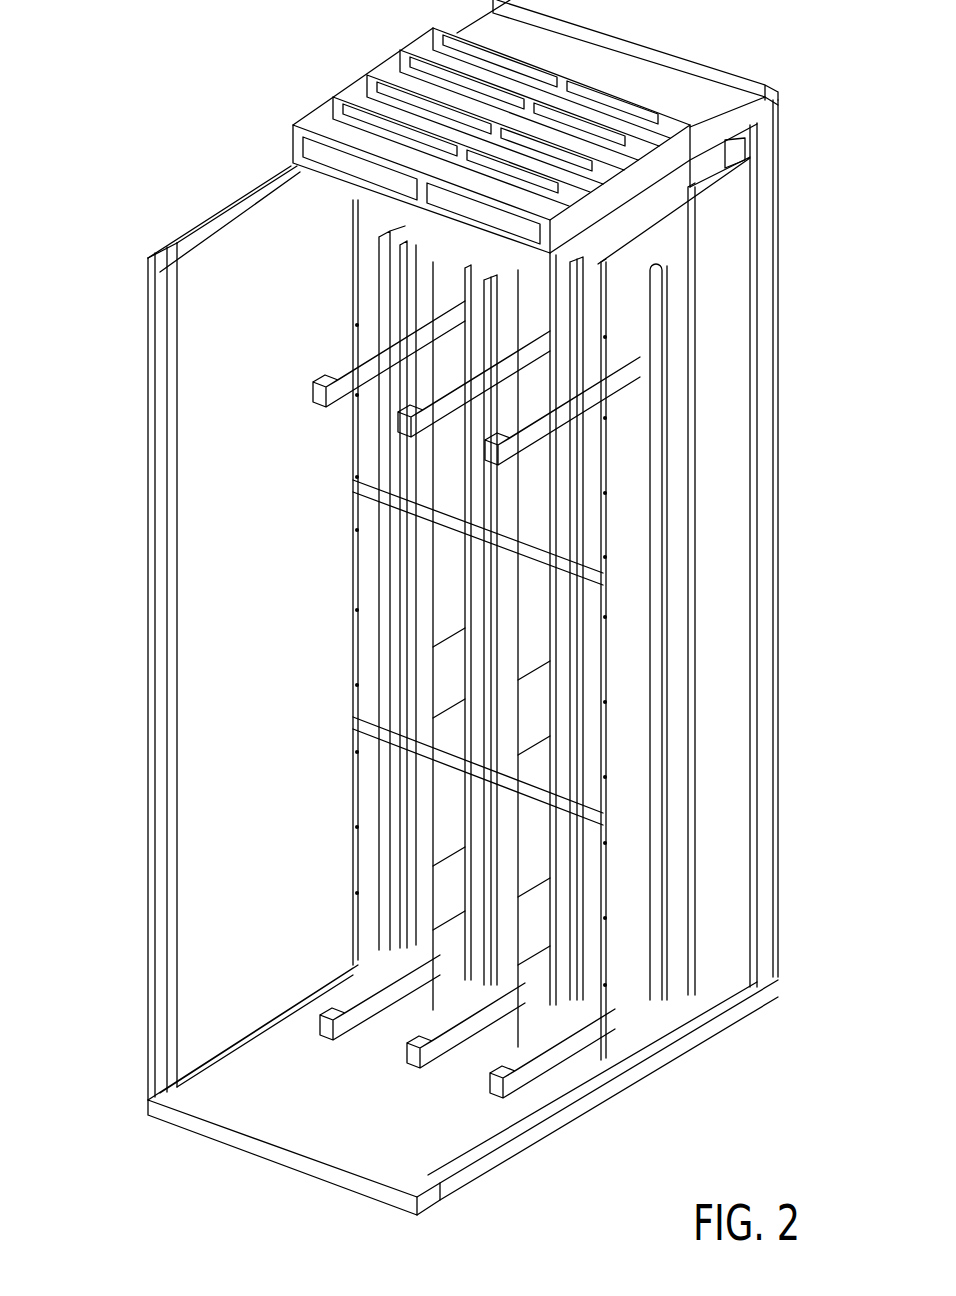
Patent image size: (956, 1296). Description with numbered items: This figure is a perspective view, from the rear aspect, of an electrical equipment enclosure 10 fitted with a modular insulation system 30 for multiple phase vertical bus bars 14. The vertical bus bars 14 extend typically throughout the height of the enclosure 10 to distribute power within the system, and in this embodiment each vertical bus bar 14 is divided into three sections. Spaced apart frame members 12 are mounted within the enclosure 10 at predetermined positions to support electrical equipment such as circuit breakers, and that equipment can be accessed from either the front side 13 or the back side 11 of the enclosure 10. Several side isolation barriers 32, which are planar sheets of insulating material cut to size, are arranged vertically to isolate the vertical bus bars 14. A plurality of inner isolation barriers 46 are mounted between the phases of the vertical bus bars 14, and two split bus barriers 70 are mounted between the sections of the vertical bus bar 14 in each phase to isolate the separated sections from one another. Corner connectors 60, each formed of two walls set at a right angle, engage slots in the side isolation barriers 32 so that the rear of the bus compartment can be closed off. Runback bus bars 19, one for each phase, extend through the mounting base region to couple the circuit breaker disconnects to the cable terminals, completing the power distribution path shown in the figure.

The electrical equipment enclosure 10 is at (248, 80).
The back side 11 is at (122, 1030).
The frame members 12 is at (680, 983).
The front side 13 is at (812, 172).
The vertical bus bars 14 is at (393, 262).
The runback bus bars 19 is at (340, 1022).
The insulation system 30 is at (320, 427).
The side isolation barriers 32 is at (370, 792).
The inner isolation barriers 46 is at (462, 632).
The corner connectors 60 is at (355, 682).
The split bus barriers 70 is at (352, 485).